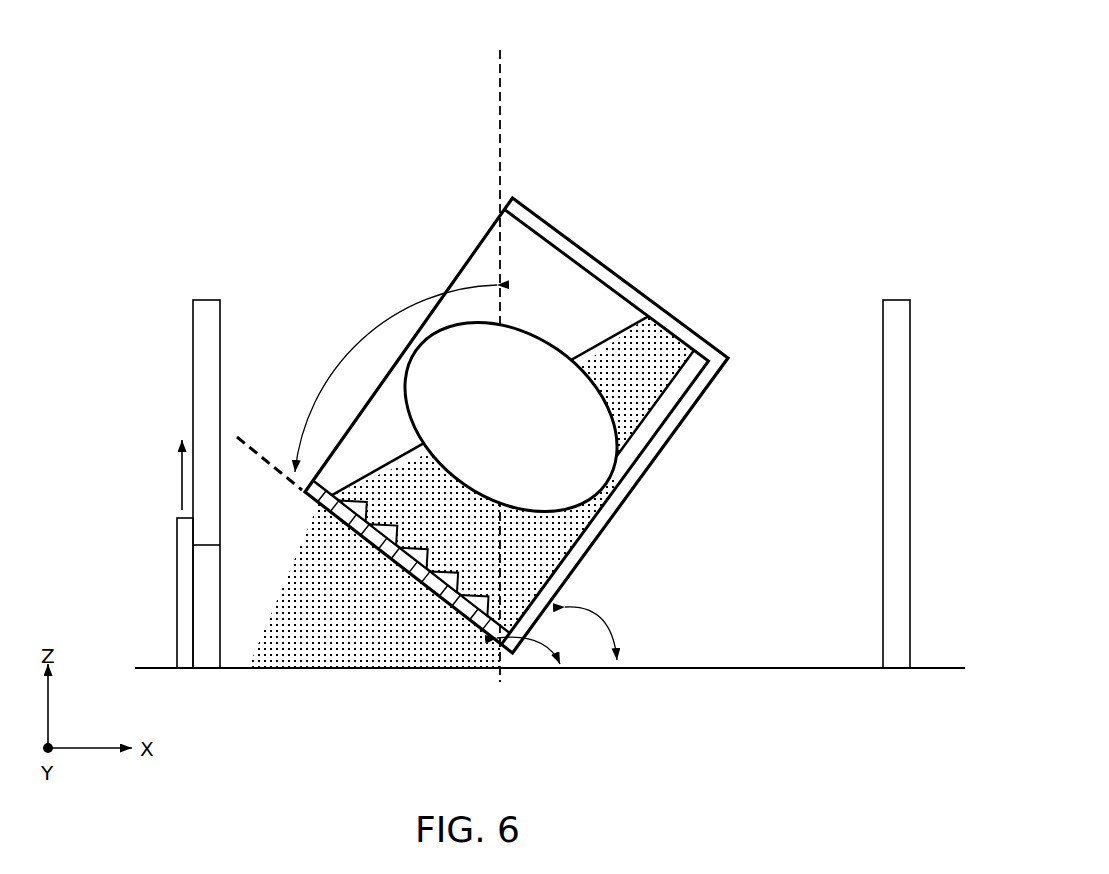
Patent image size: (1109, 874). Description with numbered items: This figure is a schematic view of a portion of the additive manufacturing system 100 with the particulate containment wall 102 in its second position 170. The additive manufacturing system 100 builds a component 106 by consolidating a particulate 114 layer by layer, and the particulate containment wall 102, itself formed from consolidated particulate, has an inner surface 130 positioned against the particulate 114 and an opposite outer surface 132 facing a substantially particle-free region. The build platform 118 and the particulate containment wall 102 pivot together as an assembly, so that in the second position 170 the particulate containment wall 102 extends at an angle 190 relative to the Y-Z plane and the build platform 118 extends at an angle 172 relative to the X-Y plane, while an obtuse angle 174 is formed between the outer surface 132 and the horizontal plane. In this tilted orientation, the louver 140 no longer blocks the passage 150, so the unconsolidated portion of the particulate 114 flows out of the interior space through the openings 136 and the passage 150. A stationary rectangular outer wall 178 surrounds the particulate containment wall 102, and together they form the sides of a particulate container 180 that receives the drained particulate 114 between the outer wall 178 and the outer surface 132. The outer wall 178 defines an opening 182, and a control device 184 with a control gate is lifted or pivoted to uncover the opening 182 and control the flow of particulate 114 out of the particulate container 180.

The additive manufacturing system 100 is at (770, 66).
The particulate containment wall 102 is at (547, 220).
The component 106 is at (550, 342).
The particulate 114 is at (672, 347).
The build platform 118 is at (667, 428).
The inner surface 130 is at (330, 486).
The outer surface 132 is at (340, 530).
The openings 136 is at (362, 622).
The louver 140 is at (470, 570).
The passage 150 is at (458, 629).
The second position 170 is at (640, 208).
The angle 172 is at (598, 627).
The angle 174 is at (528, 656).
The outer wall 178 is at (206, 298).
The particulate container 180 is at (663, 690).
The opening 182 is at (203, 548).
The control device 184 is at (177, 511).
The angle 190 is at (373, 330).